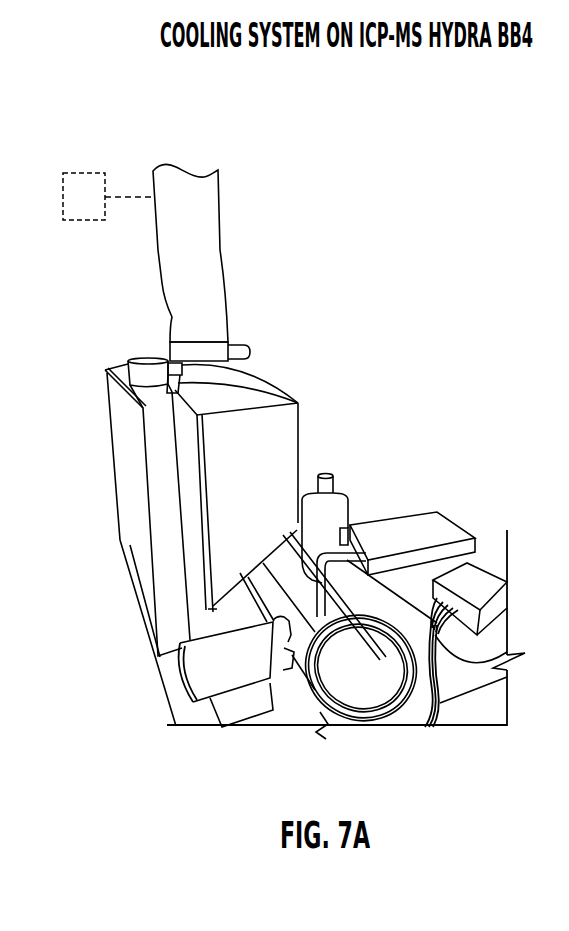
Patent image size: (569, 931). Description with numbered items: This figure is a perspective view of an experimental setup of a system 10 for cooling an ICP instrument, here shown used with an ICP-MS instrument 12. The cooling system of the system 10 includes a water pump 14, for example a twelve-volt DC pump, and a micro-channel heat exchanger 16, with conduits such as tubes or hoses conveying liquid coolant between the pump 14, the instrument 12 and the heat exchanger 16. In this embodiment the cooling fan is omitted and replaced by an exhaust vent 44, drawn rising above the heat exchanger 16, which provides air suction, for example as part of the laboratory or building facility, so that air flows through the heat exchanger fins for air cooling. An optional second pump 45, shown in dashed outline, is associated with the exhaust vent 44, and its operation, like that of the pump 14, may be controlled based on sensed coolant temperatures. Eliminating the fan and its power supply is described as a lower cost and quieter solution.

The system 10 is at (304, 205).
The ICP instrument 12 is at (262, 392).
The pump 14 is at (273, 728).
The heat exchanger 16 is at (127, 547).
The exhaust vent 44 is at (222, 258).
The second pump 45 is at (99, 211).